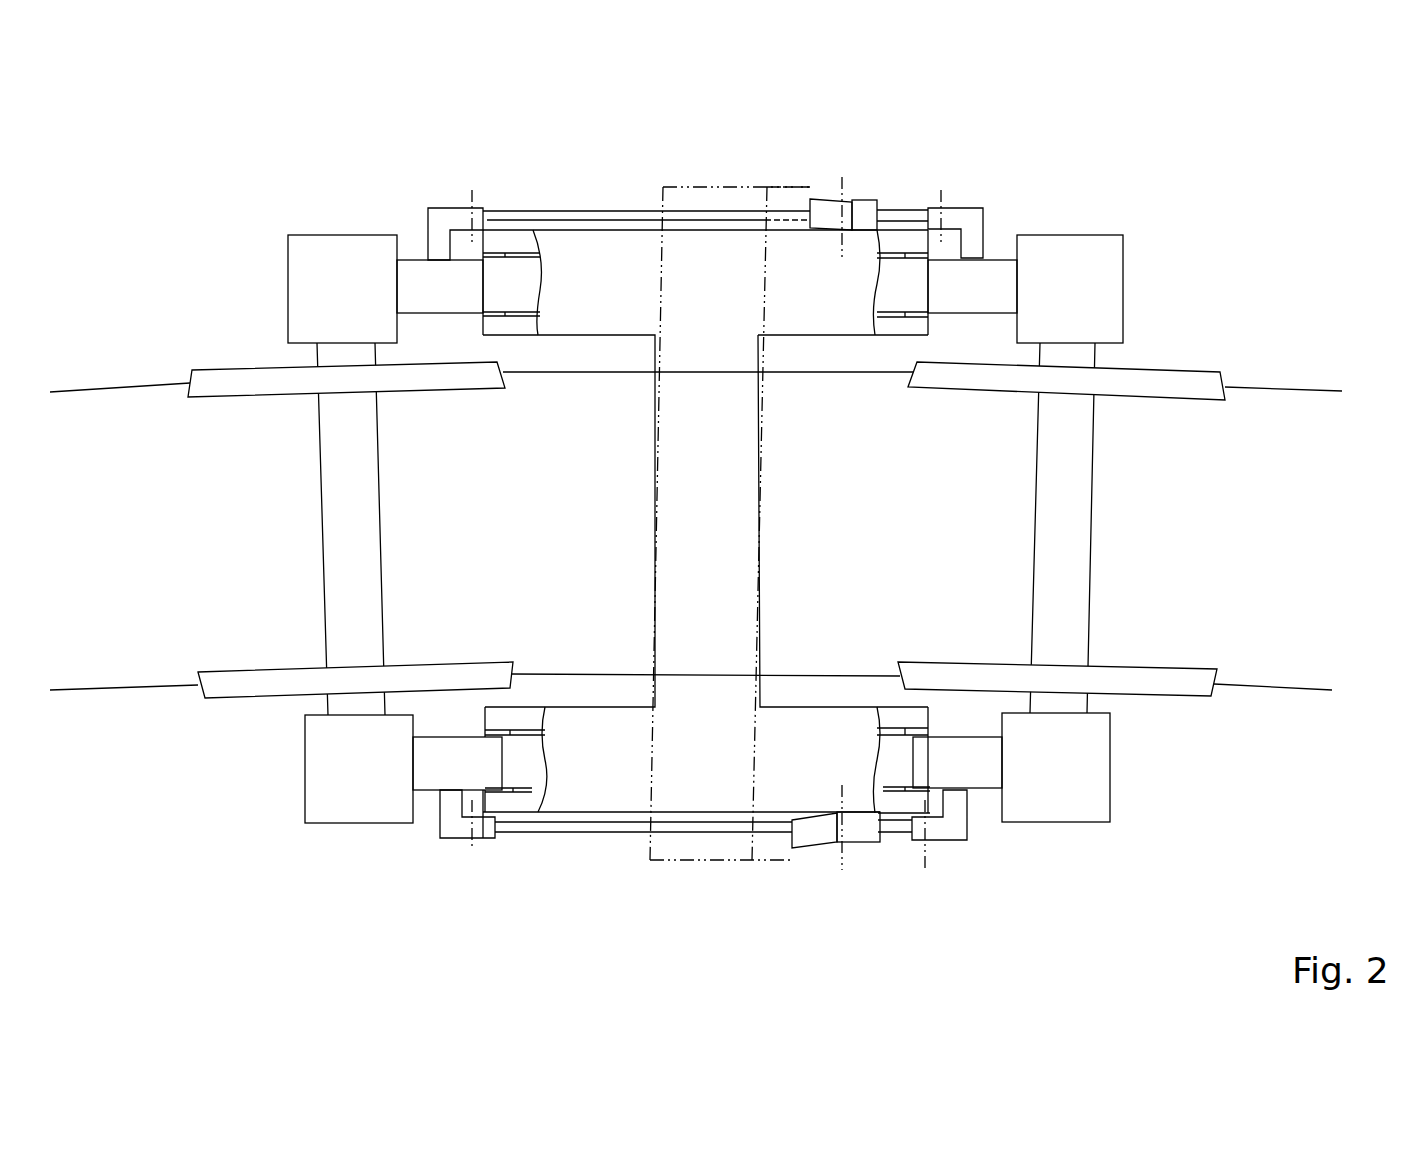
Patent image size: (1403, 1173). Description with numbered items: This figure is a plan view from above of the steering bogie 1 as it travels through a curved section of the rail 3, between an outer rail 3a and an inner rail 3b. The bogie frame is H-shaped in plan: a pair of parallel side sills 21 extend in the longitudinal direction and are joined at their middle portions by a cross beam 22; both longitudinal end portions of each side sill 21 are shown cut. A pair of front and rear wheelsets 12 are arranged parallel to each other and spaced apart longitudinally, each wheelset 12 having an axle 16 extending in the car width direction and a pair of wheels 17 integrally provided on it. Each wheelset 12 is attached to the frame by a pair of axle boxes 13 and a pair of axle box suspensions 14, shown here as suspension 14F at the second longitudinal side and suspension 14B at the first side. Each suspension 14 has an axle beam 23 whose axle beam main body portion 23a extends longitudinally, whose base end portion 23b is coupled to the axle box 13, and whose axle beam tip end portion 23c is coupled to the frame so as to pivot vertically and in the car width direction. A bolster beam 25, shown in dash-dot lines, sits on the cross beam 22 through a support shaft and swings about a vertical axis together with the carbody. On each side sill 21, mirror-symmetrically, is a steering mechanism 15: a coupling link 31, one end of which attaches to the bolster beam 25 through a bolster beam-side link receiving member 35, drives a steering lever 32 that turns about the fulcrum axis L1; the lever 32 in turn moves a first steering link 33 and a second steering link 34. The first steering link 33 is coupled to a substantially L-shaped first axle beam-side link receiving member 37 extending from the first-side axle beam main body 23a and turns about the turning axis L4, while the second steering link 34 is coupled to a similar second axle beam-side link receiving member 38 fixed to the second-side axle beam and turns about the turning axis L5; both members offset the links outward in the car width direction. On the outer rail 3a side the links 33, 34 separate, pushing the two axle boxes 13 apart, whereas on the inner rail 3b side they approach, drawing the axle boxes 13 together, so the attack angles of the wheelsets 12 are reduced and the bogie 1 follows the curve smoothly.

The steering bogie 1 is at (1210, 128).
The rail 3 is at (696, 538).
The outer rail 3a is at (1278, 385).
The inner rail 3b is at (1283, 690).
The wheelset 12 is at (250, 305).
The axle box 13 is at (302, 248).
The axle box suspension 14 is at (740, 528).
The axle box suspension 14F is at (458, 526).
The axle box suspension 14B is at (995, 528).
The steering mechanism 15 is at (843, 520).
The axle 16 is at (320, 520).
The wheel 17 is at (193, 380).
The side sill 21 is at (705, 541).
The cross beam 22 is at (748, 422).
The axle beam 23 is at (708, 521).
The axle beam main body portion 23a is at (437, 303).
The base end portion 23b is at (550, 461).
The axle beam tip end portion 23c is at (505, 300).
The bolster beam 25 is at (703, 187).
The coupling link 31 is at (828, 200).
The steering lever 32 is at (865, 200).
The first steering link 33 is at (907, 210).
The second steering link 34 is at (565, 220).
The bolster beam-side link receiving member 35 is at (793, 193).
The first axle beam-side link receiving member 37 is at (968, 208).
The second axle beam-side link receiving member 38 is at (452, 218).
The fulcrum axis L1 is at (838, 255).
The turning axis L4 is at (950, 185).
The turning axis L5 is at (510, 522).